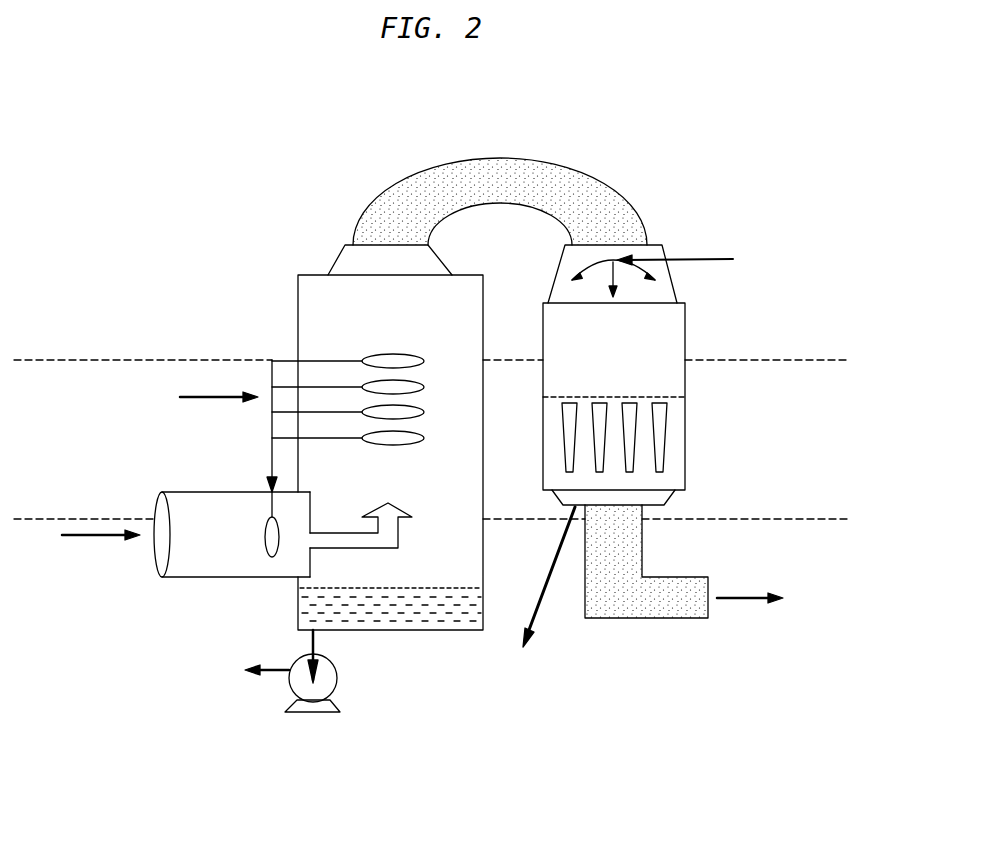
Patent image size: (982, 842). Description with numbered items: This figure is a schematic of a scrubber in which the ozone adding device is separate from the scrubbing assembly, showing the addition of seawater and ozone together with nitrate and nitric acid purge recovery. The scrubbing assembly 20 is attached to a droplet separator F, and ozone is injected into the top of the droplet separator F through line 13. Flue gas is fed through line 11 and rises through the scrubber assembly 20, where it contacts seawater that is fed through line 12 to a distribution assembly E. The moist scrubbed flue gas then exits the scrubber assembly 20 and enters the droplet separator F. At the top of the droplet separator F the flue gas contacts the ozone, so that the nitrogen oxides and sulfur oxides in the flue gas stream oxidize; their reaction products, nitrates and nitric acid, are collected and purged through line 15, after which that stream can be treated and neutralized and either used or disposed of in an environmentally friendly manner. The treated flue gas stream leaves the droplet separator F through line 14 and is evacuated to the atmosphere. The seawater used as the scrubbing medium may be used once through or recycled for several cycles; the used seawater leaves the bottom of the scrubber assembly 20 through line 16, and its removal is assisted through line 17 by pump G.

The line 11 is at (90, 538).
The line 12 is at (210, 400).
The line 13 is at (702, 256).
The line 14 is at (746, 596).
The line 15 is at (546, 580).
The line 16 is at (318, 657).
The line 17 is at (277, 667).
The scrubbing assembly 20 is at (295, 323).
The distribution assembly E is at (344, 440).
The droplet separator F is at (688, 430).
The pump G is at (312, 698).